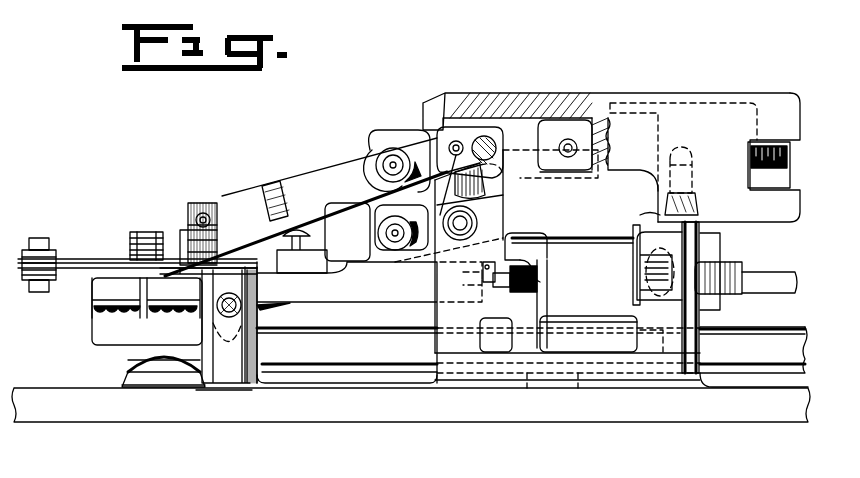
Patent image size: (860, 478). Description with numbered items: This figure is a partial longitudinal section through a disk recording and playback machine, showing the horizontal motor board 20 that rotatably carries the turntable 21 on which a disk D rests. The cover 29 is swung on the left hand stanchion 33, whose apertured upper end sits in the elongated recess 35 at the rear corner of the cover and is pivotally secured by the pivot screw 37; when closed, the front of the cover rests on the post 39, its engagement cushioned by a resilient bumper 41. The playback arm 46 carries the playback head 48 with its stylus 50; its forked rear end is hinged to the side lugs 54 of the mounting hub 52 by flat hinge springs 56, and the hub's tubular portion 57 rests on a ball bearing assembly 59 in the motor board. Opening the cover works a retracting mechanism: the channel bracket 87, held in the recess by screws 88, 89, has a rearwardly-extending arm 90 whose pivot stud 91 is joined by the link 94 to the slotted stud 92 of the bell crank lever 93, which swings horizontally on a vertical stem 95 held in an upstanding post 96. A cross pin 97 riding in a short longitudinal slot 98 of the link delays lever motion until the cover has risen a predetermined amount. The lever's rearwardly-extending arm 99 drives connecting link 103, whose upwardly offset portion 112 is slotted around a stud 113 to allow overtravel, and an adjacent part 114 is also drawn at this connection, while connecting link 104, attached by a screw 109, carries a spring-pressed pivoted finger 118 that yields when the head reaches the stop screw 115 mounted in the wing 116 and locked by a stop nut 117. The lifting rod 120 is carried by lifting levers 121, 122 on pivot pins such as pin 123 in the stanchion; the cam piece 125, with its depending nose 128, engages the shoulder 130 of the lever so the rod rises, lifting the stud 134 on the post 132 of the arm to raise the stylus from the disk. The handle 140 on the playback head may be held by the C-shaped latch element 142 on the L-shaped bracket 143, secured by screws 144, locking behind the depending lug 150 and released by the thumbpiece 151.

The motor board 20 is at (335, 420).
The turntable 21 is at (353, 342).
The cover 29 is at (689, 100).
The left hand stanchion 33 is at (435, 316).
The recess 35 is at (596, 172).
The pivot screw 37 is at (490, 138).
The post 39 is at (700, 345).
The resilient bumper 41 is at (700, 200).
The playback arm 46 is at (330, 298).
The playback head 48 is at (564, 238).
The stylus 50 is at (561, 337).
The mounting hub 52 is at (84, 334).
The side lugs 54 is at (95, 292).
The flat hinge springs 56 is at (144, 316).
The tubular portion 57 is at (130, 361).
The ball bearing assembly 59 is at (122, 379).
The channel bracket 87 is at (560, 118).
The screw 88 is at (458, 142).
The screw 89 is at (575, 138).
The rearwardly-extending arm 90 is at (382, 148).
The pivot stud 91 is at (395, 149).
The slotted stud 92 is at (208, 212).
The bell crank lever 93 is at (186, 277).
The link 94 is at (304, 171).
The vertical stem 95 is at (213, 343).
The upstanding post 96 is at (323, 333).
The cross pin 97 is at (203, 216).
The longitudinal slot 98 is at (188, 223).
The rearwardly-extending arm 99 is at (108, 258).
The connecting link 103 is at (24, 259).
The connecting link 104 is at (262, 195).
The screw 109 is at (289, 249).
The upwardly offset portion 112 is at (60, 250).
The stud 113 is at (45, 238).
The nut 114 is at (26, 280).
The stop screw 115 is at (546, 272).
The wing 116 is at (537, 262).
The stop nut 117 is at (510, 287).
The pivoted finger 118 is at (140, 238).
The lifting rod 120 is at (385, 244).
The lifting lever 121 is at (441, 207).
The lifting lever 122 is at (548, 308).
The pivot pin 123 is at (470, 223).
The cam piece 125 is at (548, 170).
The depending nose 128 is at (503, 204).
The shoulder 130 is at (505, 186).
The post 132 is at (341, 212).
The stud 134 is at (386, 219).
The handle 140 is at (767, 286).
The latch element 142 is at (643, 303).
The L-shaped bracket 143 is at (638, 217).
The screws 144 is at (636, 274).
The depending lug 150 is at (718, 255).
The thumbpiece 151 is at (734, 276).
The disk D is at (760, 331).